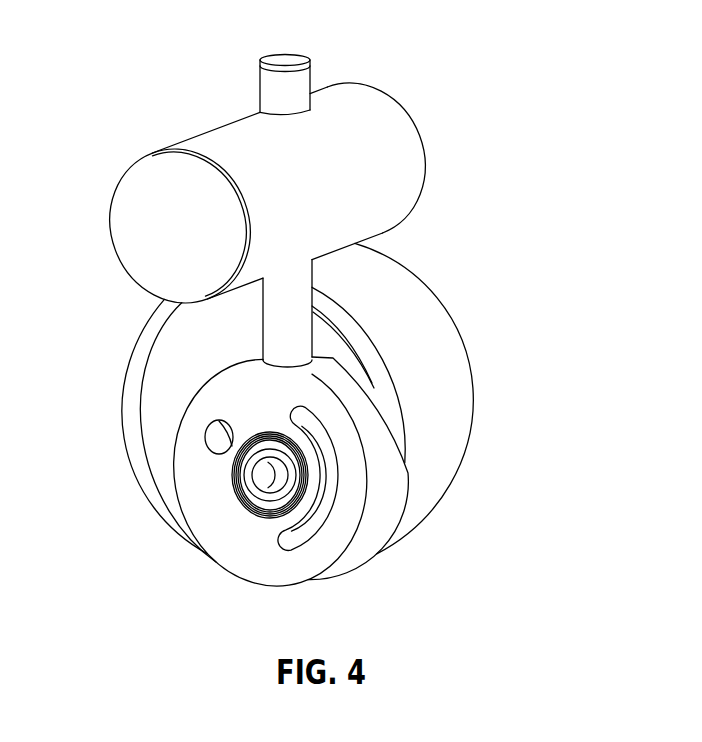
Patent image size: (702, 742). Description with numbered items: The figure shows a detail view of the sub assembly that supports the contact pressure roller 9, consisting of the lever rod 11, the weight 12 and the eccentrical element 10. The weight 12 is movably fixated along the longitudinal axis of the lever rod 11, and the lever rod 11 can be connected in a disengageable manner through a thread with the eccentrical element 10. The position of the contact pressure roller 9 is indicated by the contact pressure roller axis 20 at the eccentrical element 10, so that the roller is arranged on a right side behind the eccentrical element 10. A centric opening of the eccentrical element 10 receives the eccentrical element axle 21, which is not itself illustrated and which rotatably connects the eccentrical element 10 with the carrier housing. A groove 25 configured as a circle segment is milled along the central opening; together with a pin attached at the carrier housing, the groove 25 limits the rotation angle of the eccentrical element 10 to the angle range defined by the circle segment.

The contact pressure roller 9 is at (412, 318).
The eccentrical element 10 is at (367, 542).
The lever rod 11 is at (273, 78).
The weight 12 is at (388, 152).
The contact pressure roller axis 20 is at (215, 445).
The eccentrical element axle 21 is at (245, 504).
The groove 25 is at (328, 508).